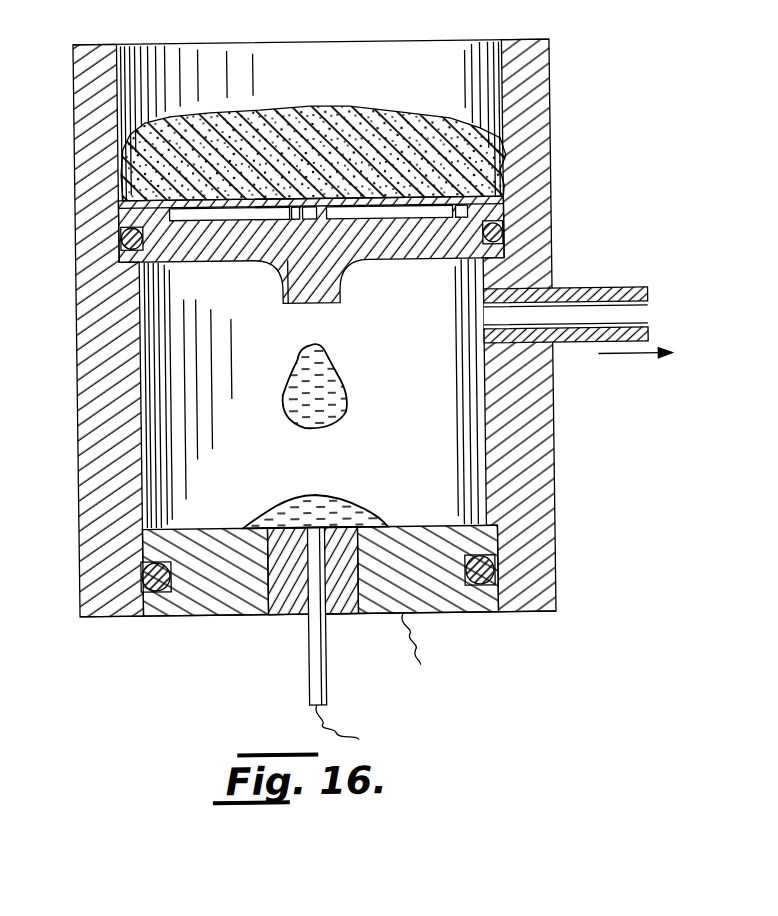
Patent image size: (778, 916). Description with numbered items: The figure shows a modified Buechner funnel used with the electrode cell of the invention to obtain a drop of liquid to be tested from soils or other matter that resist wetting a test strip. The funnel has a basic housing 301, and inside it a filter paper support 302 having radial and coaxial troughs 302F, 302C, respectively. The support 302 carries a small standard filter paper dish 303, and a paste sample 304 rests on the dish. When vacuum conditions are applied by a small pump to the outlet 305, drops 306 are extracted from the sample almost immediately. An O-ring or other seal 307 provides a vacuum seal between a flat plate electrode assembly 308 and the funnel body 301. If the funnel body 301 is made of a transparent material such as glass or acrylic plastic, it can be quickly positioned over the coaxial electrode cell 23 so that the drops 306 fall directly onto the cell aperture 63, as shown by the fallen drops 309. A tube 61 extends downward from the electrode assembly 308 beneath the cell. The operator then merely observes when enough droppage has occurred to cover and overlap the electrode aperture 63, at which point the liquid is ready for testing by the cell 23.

The housing 301 is at (109, 49).
The filter paper support 302 is at (181, 250).
The coaxial troughs 302C is at (176, 212).
The radial troughs 302F is at (372, 212).
The filter paper dish 303 is at (466, 202).
The paste sample 304 is at (349, 112).
The outlet 305 is at (606, 294).
The drops 306 is at (289, 402).
The O-ring or seal 307 is at (159, 592).
The flat plate electrode assembly 308 is at (456, 605).
The fallen drops on cell aperture 309 is at (281, 502).
The tube 61 is at (322, 665).
The cell aperture 63 is at (280, 604).
The coaxial electrode cell 23 is at (295, 630).